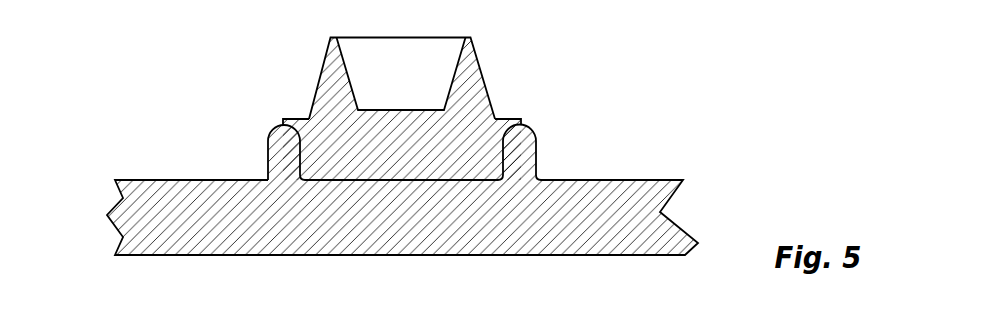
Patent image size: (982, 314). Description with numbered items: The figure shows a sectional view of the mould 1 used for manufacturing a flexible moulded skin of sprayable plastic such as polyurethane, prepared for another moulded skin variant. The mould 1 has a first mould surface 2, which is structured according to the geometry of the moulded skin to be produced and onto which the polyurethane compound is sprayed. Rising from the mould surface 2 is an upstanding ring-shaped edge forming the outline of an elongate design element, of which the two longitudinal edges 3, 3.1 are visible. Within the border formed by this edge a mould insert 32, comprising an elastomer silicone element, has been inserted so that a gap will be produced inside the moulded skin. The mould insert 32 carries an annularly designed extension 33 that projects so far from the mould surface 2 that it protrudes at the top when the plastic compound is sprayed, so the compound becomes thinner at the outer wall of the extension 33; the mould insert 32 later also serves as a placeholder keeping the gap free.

The mould 1 is at (536, 228).
The mould surface 2 is at (603, 178).
The longitudinal edge 3 is at (275, 151).
The longitudinal edge 3.1 is at (533, 139).
The mould insert 32 is at (386, 153).
The extension 33 is at (326, 66).